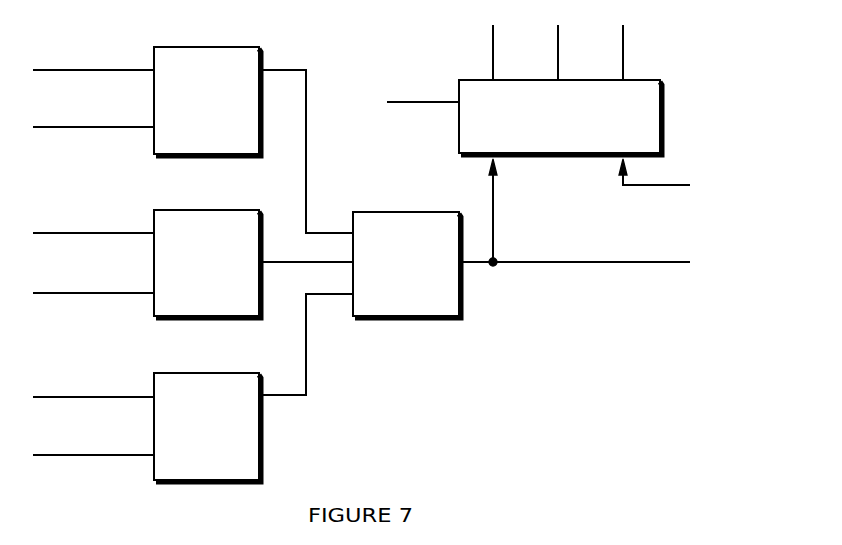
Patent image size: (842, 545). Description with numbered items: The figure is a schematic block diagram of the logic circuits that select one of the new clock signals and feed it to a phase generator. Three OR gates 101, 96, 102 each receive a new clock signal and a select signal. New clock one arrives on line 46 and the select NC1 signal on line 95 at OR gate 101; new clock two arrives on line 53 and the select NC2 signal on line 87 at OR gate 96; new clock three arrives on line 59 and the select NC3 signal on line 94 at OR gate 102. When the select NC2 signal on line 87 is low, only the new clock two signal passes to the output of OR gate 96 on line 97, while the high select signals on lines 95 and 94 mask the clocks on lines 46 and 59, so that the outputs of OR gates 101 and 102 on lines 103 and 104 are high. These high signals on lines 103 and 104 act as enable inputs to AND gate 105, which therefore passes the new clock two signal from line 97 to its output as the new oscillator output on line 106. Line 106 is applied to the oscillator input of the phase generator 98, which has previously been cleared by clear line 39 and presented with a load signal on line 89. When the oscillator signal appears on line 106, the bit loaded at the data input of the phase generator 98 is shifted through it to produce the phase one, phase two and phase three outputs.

The select NC1 line 95 is at (129, 68).
The new clock one line 46 is at (137, 131).
The OR gate 101 is at (236, 46).
The OR gate output line 103 is at (291, 69).
The select NC2 line 87 is at (130, 231).
The new clock two line 53 is at (129, 296).
The OR gate 96 is at (234, 209).
The OR gate output line 97 is at (286, 260).
The select NC3 line 94 is at (130, 395).
The new clock three line 59 is at (132, 458).
The OR gate 102 is at (233, 372).
The OR gate output line 104 is at (299, 398).
The AND gate 105 is at (373, 210).
The new oscillator output line 106 is at (493, 206).
The phase generator 98 is at (576, 160).
The load line 89 is at (443, 100).
The clear line 39 is at (674, 188).